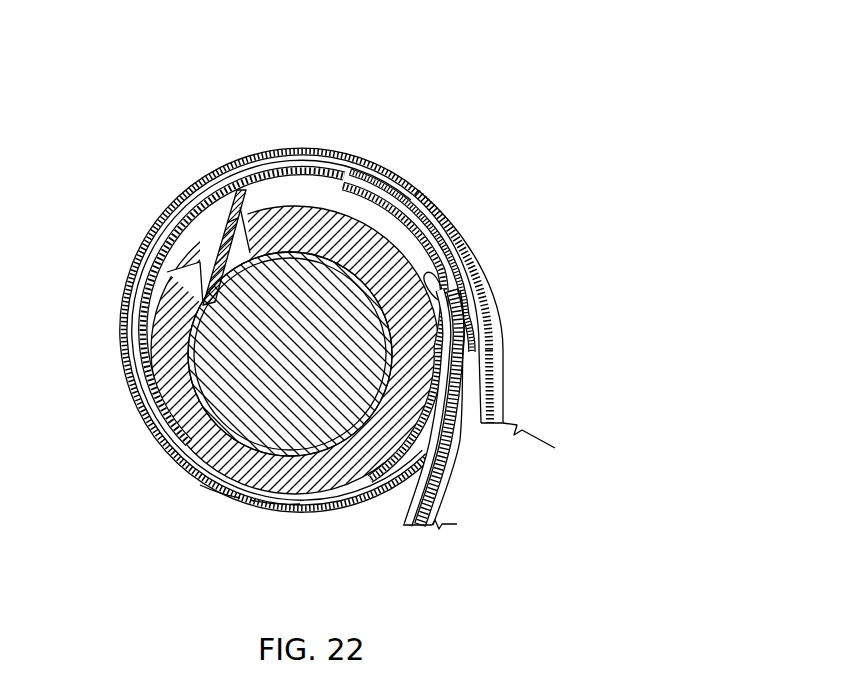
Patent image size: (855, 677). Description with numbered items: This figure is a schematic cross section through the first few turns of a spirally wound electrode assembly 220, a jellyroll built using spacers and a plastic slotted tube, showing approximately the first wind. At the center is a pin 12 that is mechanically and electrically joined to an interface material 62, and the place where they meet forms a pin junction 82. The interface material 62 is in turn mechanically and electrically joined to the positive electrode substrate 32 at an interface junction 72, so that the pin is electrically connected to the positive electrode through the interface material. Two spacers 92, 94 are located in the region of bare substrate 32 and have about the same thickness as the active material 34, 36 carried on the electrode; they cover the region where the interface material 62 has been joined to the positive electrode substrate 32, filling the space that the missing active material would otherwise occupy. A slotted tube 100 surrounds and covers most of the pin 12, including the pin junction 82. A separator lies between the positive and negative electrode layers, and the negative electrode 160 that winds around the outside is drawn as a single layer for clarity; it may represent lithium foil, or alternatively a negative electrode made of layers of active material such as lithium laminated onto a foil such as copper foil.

The pin 12 is at (200, 322).
The pin junction 82 is at (205, 308).
The slotted tube 100 is at (150, 272).
The spirally wound electrode assembly 220 is at (566, 252).
The interface material 62 is at (270, 175).
The spacer 94 is at (402, 165).
The interface junction 72 is at (408, 195).
The spacer 92 is at (443, 220).
The negative electrode 160 is at (496, 382).
The active material 34 is at (427, 482).
The active material 36 is at (457, 443).
The positive electrode substrate 32 is at (417, 525).